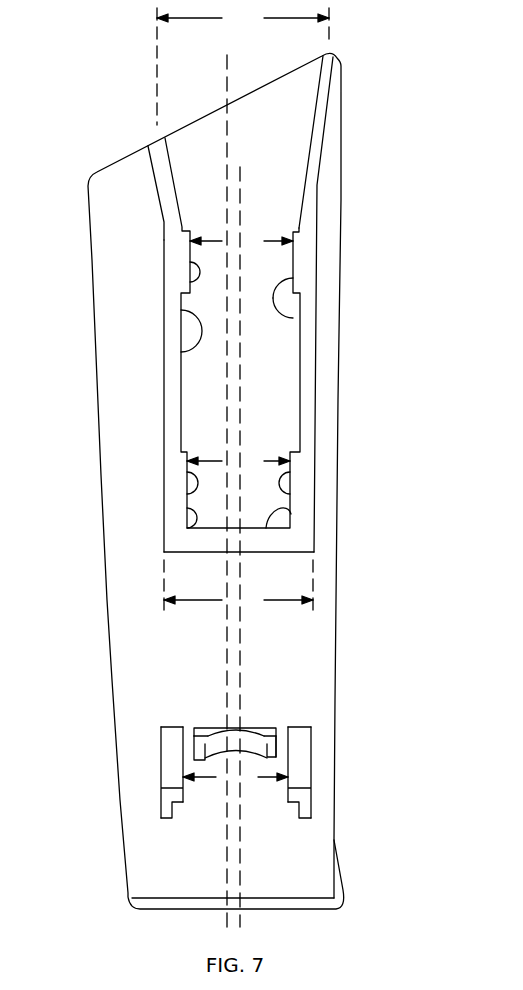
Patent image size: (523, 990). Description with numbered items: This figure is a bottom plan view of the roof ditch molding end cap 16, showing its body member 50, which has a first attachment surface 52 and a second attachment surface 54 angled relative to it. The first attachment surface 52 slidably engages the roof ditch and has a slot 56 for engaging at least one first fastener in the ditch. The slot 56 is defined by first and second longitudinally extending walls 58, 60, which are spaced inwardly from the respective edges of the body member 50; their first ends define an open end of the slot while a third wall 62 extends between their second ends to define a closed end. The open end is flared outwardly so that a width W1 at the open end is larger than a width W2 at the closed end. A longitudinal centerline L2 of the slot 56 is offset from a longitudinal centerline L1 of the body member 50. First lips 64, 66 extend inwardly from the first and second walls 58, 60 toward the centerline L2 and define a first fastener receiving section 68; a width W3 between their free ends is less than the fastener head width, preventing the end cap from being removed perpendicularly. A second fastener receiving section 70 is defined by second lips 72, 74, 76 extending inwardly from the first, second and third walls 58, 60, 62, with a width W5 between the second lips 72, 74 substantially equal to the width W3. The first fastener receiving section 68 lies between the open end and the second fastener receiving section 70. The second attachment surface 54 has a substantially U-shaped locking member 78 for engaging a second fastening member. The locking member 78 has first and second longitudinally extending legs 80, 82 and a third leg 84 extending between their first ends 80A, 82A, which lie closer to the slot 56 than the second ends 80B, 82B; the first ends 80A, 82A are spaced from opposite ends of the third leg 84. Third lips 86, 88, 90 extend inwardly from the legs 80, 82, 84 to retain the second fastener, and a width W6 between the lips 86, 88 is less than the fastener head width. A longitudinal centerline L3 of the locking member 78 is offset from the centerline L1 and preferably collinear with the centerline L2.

The roof ditch molding end cap 16 is at (188, 481).
The body member 50 is at (101, 475).
The first attachment surface 52 is at (132, 320).
The second attachment surface 54 is at (142, 797).
The slot 56 is at (185, 355).
The first longitudinally extending wall 58 is at (164, 420).
The second longitudinally extending wall 60 is at (317, 420).
The third wall 62 is at (200, 553).
The first lip 64 is at (186, 282).
The first lip 66 is at (292, 318).
The first fastener receiving section 68 is at (268, 268).
The second fastener receiving section 70 is at (196, 498).
The second lip 72 is at (196, 531).
The second lip 74 is at (281, 496).
The second lip 76 is at (286, 516).
The locking member 78 is at (122, 771).
The first longitudinally extending leg 80 is at (122, 771).
The first end of first longitudinally extending leg 80A is at (175, 726).
The second end of first longitudinally extending leg 80B is at (165, 821).
The second longitudinally extending leg 82 is at (337, 773).
The first end of second longitudinally extending leg 82A is at (292, 726).
The second end of second longitudinally extending leg 82B is at (312, 818).
The third leg 84 is at (261, 766).
The third lip 86 is at (184, 783).
The third lip 88 is at (289, 785).
The third lip 90 is at (266, 762).
The longitudinal centerline of the body member L1 is at (226, 385).
The longitudinal centerline of the slot L2 is at (243, 335).
The longitudinal centerline of the locking member L3 is at (243, 679).
The width of the slot at the open end W1 is at (243, 65).
The width of the slot at the closed end W2 is at (238, 586).
The width between free ends of the first lips W3 is at (241, 241).
The width between free ends of the second lips W5 is at (238, 461).
The width between free ends of the third lips W6 is at (235, 777).